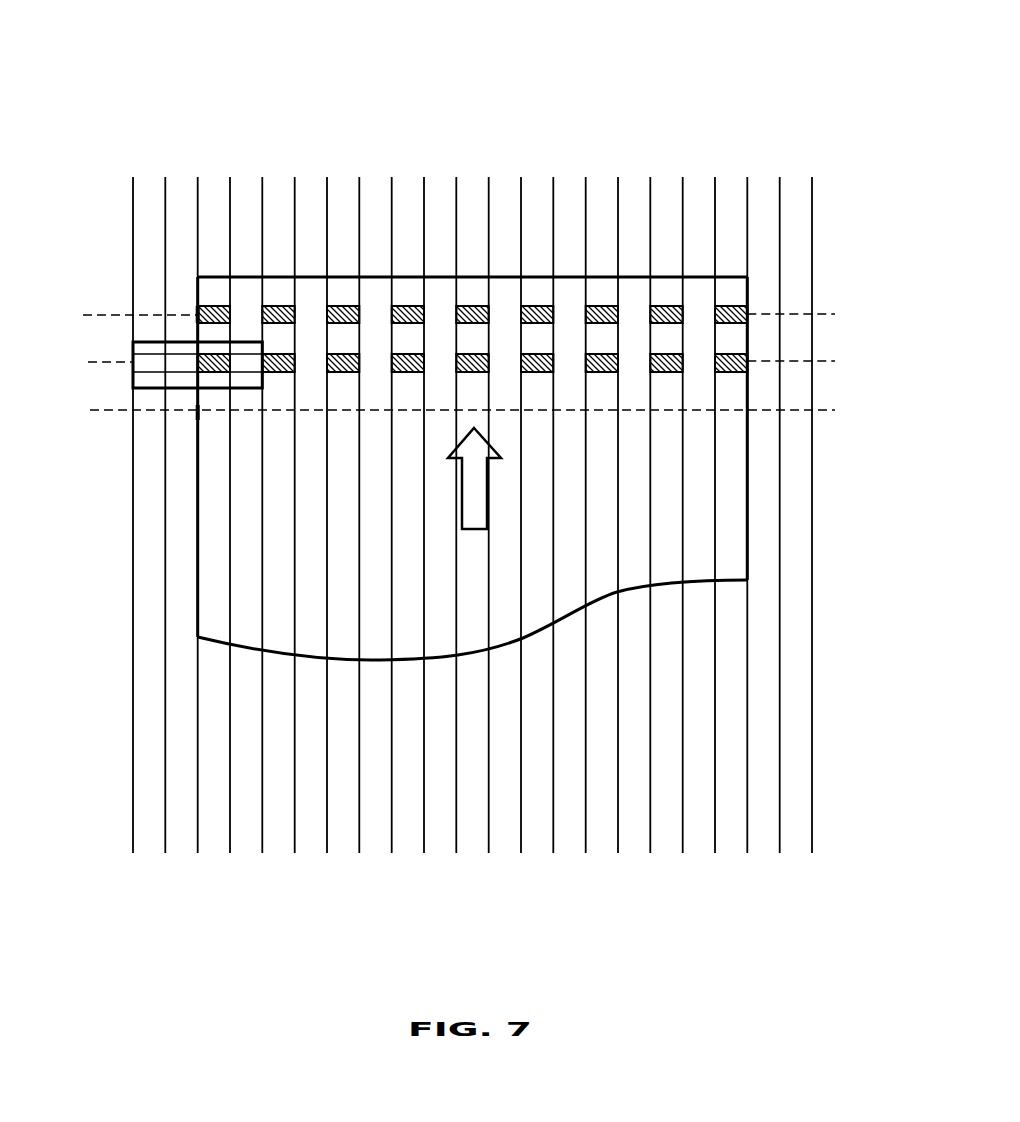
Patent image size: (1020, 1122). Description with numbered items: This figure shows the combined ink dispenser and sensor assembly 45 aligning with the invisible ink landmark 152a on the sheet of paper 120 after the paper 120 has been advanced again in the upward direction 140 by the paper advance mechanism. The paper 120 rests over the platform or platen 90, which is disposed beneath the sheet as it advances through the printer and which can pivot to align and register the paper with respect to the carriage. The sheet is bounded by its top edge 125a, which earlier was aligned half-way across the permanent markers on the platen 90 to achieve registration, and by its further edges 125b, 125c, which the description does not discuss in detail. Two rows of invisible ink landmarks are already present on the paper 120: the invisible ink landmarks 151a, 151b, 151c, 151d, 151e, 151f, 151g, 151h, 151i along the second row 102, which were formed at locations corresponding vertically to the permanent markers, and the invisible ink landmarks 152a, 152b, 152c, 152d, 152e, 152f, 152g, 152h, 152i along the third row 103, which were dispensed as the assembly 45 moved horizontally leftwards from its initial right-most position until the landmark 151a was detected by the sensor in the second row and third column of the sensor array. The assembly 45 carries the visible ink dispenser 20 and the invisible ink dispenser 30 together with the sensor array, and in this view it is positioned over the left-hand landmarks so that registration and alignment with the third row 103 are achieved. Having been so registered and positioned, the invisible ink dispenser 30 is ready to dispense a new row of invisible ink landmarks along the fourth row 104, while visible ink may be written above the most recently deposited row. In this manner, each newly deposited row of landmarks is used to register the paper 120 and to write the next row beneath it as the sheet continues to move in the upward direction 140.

The platform or platen 90 is at (830, 116).
The top edge of sheet of paper 125a is at (632, 276).
The second edge of patch 125b is at (197, 477).
The third edge of patch 125c is at (748, 458).
The sheet of paper 120 is at (216, 619).
The invisible ink landmark 151a is at (209, 306).
The invisible ink landmark 151b is at (274, 306).
The invisible ink landmark 151c is at (338, 306).
The invisible ink landmark 151d is at (403, 306).
The invisible ink landmark 151e is at (468, 306).
The invisible ink landmark 151f is at (532, 306).
The invisible ink landmark 151g is at (597, 306).
The invisible ink landmark 151h is at (662, 306).
The invisible ink landmark 151i is at (726, 306).
The invisible ink landmark 152a is at (218, 373).
The invisible ink landmark 152b is at (283, 373).
The invisible ink landmark 152c is at (347, 373).
The invisible ink landmark 152d is at (412, 373).
The invisible ink landmark 152e is at (477, 373).
The invisible ink landmark 152f is at (541, 373).
The invisible ink landmark 152g is at (606, 373).
The invisible ink landmark 152h is at (671, 373).
The invisible ink landmark 152i is at (722, 373).
The combined ink dispenser and sensor assembly 45 is at (132, 350).
The second row 102 is at (457, 314).
The third row 103 is at (457, 361).
The fourth row 104 is at (462, 409).
The visible ink dispenser 20 is at (197, 312).
The invisible ink dispenser 30 is at (197, 420).
The upward direction 140 is at (488, 481).